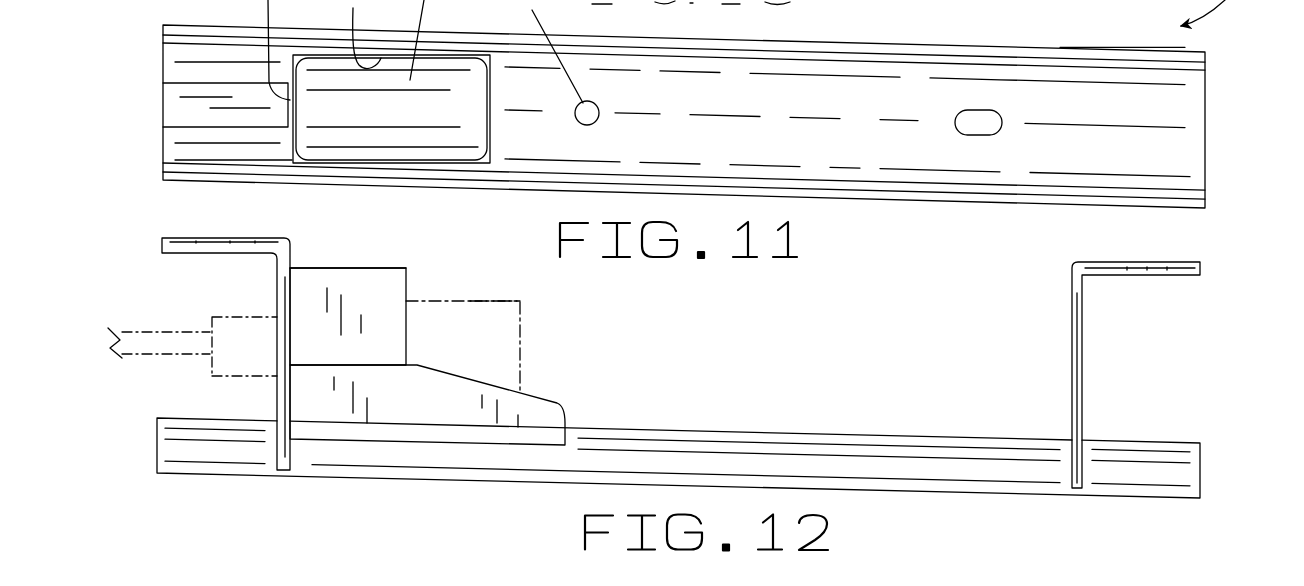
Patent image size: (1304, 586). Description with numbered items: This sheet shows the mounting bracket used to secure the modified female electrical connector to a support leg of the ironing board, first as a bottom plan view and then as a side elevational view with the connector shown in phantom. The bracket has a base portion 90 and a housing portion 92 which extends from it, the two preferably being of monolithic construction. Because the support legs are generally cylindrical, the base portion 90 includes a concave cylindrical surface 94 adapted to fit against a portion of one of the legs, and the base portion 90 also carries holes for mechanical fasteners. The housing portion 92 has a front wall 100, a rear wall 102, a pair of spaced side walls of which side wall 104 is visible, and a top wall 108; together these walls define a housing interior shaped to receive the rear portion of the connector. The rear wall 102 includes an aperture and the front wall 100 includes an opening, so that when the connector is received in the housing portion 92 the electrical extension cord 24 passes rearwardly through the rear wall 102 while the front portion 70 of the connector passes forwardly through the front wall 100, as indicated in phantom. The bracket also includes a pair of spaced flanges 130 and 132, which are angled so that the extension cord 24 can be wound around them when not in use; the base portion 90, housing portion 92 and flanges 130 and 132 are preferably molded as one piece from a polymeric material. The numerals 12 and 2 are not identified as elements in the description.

In FIG. 11, the base portion 90 is at (891, 40).
In FIG. 12, the base portion 90 is at (782, 428).
In FIG. 11, the slot 12 is at (992, 128).
In FIG. 11, the concave cylindrical surface 94 is at (1051, 99).
In FIG. 12, the flange 130 is at (178, 250).
In FIG. 12, the rear wall 102 is at (277, 300).
In FIG. 12, the electrical extension cord 24 is at (150, 358).
In FIG. 12, the side wall 104 is at (312, 307).
In FIG. 12, the top wall 108 is at (347, 266).
In FIG. 12, the housing portion 92 is at (367, 264).
In FIG. 12, the front wall 100 is at (406, 285).
In FIG. 12, the front portion 70 is at (478, 300).
In FIG. 12, the flange 132 is at (1167, 262).
In FIG. 12, the assembly 2 is at (1219, 339).